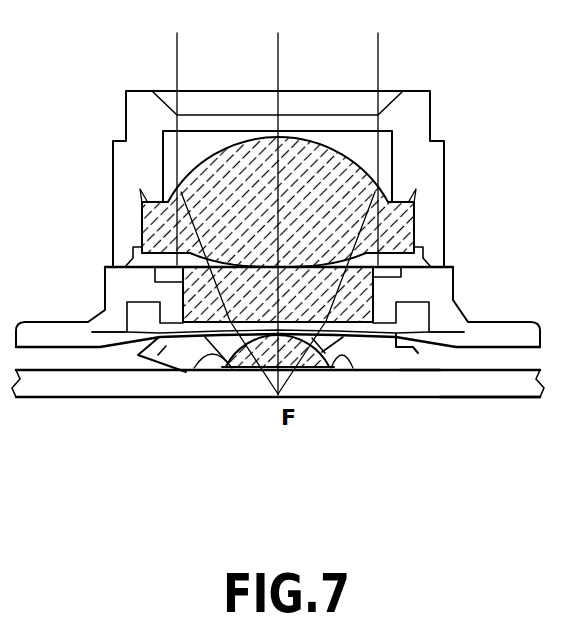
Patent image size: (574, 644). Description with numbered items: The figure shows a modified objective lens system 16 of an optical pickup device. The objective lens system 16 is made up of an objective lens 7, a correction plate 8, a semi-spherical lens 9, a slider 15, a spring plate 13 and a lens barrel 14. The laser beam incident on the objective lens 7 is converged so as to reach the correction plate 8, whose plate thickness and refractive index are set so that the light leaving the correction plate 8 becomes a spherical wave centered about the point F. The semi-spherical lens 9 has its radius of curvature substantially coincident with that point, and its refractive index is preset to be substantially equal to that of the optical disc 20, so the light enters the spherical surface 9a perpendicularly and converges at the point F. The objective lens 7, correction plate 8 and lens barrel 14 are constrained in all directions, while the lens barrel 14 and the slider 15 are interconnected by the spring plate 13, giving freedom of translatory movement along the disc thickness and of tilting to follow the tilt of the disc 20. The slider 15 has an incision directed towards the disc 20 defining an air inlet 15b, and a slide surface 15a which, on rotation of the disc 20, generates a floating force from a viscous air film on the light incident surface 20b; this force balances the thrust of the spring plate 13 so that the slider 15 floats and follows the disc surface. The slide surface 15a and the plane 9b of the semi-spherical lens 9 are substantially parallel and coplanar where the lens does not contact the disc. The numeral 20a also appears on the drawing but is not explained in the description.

The objective lens 7 is at (333, 148).
The correction plate 8 is at (380, 293).
The semi-spherical lens 9 is at (244, 368).
The spherical surface 9a is at (210, 355).
The plane of the semi-spherical lens 9b is at (233, 367).
The spring plate 13 is at (113, 350).
The lens barrel 14 is at (118, 285).
The slider 15 is at (390, 368).
The slide surface 15a is at (352, 368).
The air inlet 15b is at (384, 364).
The objective lens system 16 is at (104, 95).
The optical disc 20 is at (477, 375).
The board lower surface 20a is at (452, 394).
The light incident surface 20b is at (413, 368).